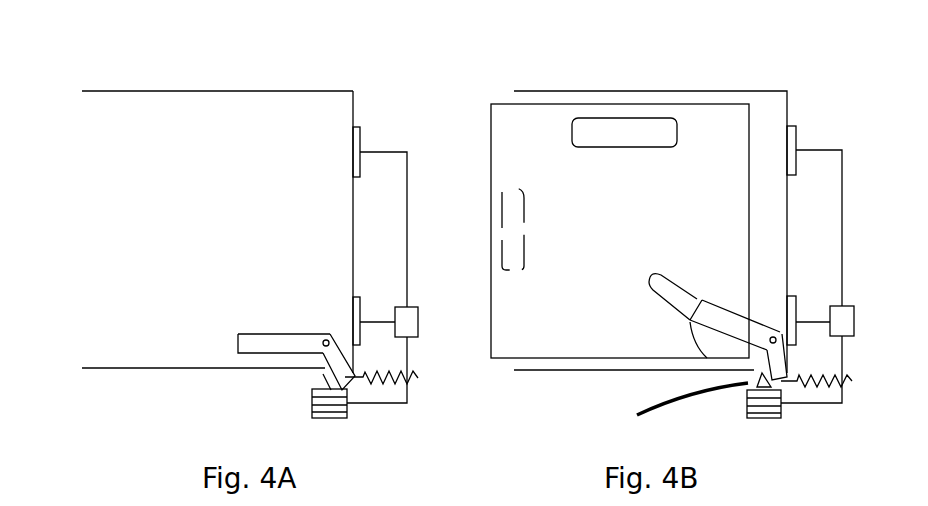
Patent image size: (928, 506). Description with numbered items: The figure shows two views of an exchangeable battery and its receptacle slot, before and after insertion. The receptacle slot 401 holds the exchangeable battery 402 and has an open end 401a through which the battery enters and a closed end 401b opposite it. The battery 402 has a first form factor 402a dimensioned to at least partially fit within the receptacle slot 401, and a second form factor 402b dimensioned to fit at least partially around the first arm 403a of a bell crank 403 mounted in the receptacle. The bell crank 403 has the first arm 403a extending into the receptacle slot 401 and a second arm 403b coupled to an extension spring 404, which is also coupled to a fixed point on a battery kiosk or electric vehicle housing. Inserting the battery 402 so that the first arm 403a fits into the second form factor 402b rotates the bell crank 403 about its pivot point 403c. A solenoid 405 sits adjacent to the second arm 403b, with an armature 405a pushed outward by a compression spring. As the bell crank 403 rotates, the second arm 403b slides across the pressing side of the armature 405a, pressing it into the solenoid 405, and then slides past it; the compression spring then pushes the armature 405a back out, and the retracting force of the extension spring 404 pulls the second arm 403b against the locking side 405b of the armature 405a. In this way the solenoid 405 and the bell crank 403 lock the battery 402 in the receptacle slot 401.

In FIG. 4A, the receptacle slot 401 is at (184, 195).
In FIG. 4A, the open end 401a is at (74, 299).
In FIG. 4A, the closed end 401b is at (350, 229).
In FIG. 4B, the exchangeable battery 402 is at (606, 228).
In FIG. 4B, the first form factor 402a is at (490, 137).
In FIG. 4B, the second form factor 402b is at (650, 279).
In FIG. 4A, the bell crank 403 is at (248, 342).
In FIG. 4A, the first arm 403a is at (268, 333).
In FIG. 4B, the first arm 403a is at (701, 299).
In FIG. 4A, the second arm 403b is at (318, 371).
In FIG. 4A, the pivot point 403c is at (331, 333).
In FIG. 4A, the extension spring 404 is at (384, 402).
In FIG. 4B, the solenoid 405 is at (747, 397).
In FIG. 4B, the armature 405a is at (740, 378).
In FIG. 4B, the locking side 405b is at (661, 405).